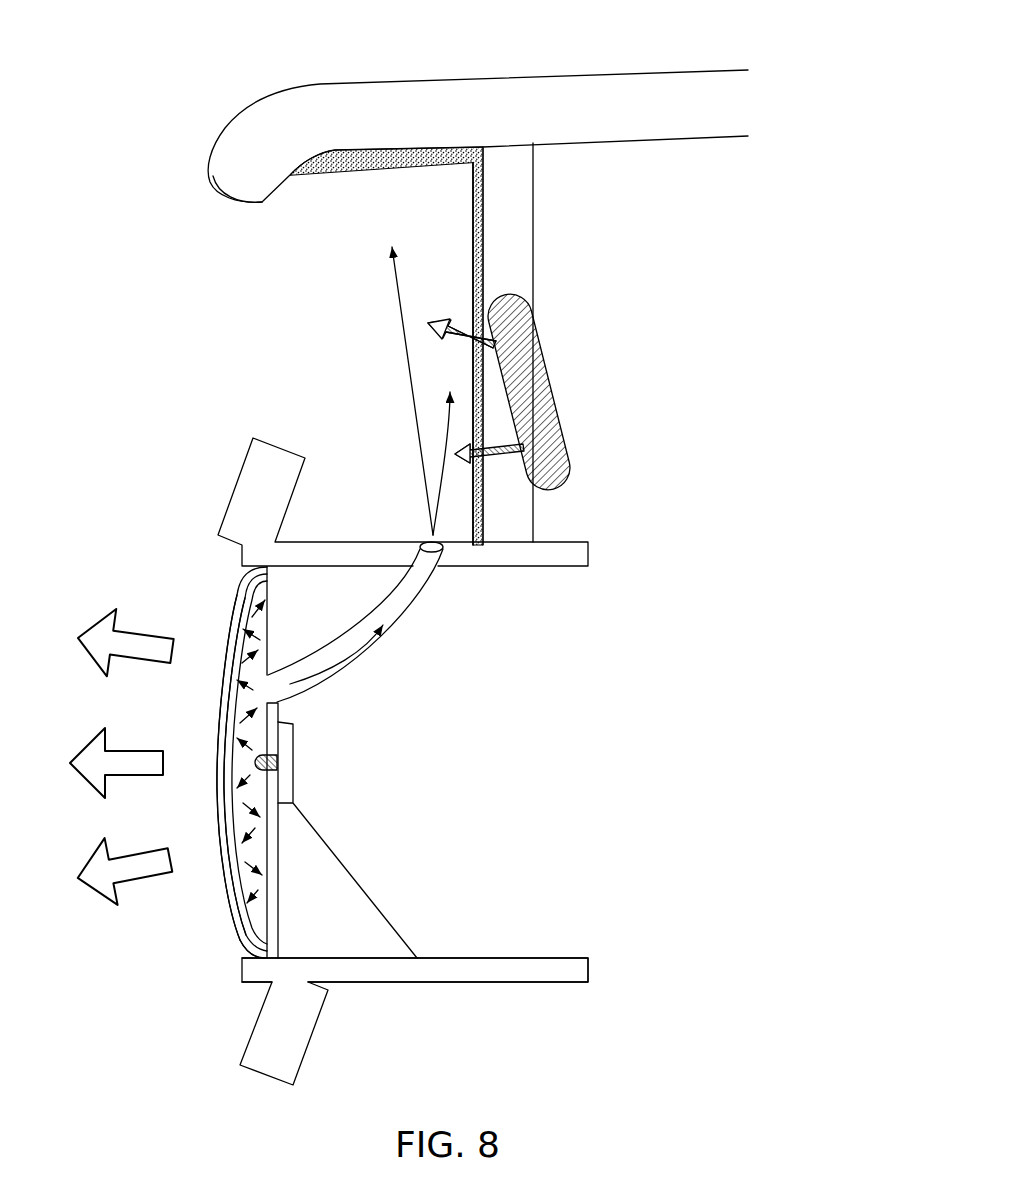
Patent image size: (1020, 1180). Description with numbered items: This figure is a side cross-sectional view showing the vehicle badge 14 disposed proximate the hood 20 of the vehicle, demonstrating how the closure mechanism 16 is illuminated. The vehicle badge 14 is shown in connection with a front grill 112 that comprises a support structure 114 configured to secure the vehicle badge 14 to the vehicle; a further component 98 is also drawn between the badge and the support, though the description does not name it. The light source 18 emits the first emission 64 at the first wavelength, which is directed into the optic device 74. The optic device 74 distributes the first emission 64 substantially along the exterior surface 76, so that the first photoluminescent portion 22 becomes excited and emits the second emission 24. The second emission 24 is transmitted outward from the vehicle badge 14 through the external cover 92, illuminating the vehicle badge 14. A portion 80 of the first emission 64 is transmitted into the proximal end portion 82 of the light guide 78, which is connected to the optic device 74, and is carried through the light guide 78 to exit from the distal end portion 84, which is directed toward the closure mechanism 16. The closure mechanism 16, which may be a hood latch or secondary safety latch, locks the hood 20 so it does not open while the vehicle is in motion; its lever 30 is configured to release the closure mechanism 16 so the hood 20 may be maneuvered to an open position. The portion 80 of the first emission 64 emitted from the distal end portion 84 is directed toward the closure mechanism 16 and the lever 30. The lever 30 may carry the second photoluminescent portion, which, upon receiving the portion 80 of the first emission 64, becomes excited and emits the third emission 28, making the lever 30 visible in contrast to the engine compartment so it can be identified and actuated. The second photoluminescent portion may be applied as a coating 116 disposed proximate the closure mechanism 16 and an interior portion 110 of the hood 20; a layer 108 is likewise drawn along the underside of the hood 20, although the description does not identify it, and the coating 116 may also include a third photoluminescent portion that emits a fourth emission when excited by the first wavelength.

The hood 20 is at (515, 90).
The interior portion of the hood 110 is at (290, 190).
The cushion layer 108 is at (372, 167).
The coating 116 is at (479, 221).
The closure mechanism 16 is at (520, 268).
The lever 30 is at (540, 387).
The third emission 28 is at (447, 321).
The portion of the first emission 80 is at (442, 432).
The distal end portion 84 is at (422, 528).
The light guide 78 is at (417, 595).
The front grill 112 is at (250, 467).
The support structure 114 is at (482, 963).
The vehicle badge 14 is at (218, 583).
The exterior surface 76 is at (240, 646).
The proximal end portion 82 is at (287, 655).
The support post 98 is at (273, 867).
The light source 18 is at (290, 733).
The first emission 64 is at (258, 787).
The external cover 92 is at (228, 893).
The first photoluminescent portion 22 is at (238, 918).
The optic device 74 is at (247, 940).
The second emission 24 is at (142, 757).